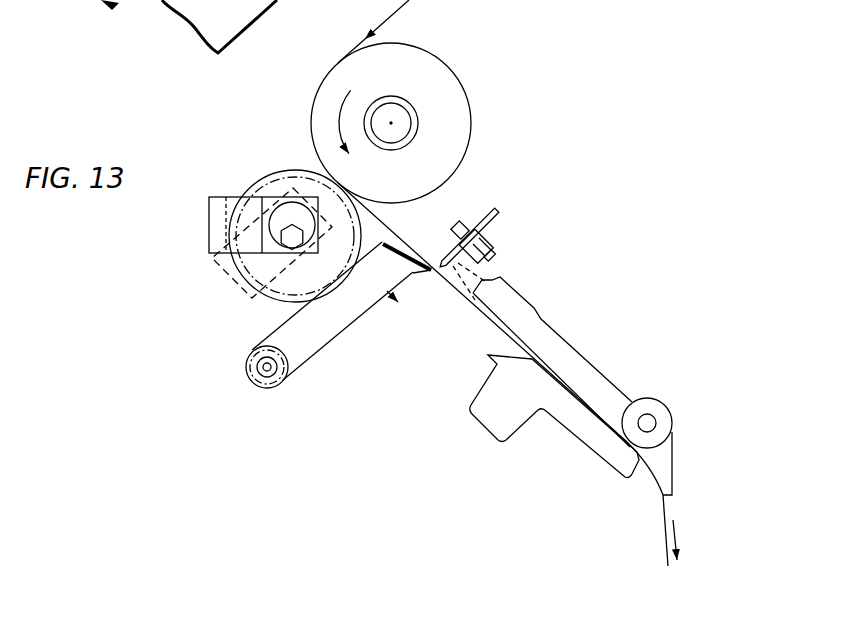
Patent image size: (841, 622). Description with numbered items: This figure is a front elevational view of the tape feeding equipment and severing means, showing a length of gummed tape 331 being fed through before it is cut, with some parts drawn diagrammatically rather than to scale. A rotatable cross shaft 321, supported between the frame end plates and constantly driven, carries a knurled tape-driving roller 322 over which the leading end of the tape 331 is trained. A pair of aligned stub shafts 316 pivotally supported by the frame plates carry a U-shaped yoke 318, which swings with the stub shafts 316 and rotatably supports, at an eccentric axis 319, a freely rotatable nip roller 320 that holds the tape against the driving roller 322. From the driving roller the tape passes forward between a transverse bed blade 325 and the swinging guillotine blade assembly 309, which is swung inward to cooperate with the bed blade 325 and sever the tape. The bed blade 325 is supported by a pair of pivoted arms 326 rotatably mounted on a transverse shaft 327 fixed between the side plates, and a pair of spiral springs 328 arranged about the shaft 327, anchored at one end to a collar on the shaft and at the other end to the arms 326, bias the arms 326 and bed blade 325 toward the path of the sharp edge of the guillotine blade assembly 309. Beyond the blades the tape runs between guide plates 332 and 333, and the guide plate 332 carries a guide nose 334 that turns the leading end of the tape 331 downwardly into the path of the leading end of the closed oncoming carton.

The guillotine blade assembly 309 is at (501, 214).
The stub shafts 316 is at (277, 203).
The U-shaped yoke 318 is at (234, 196).
The eccentric axis 319 is at (290, 238).
The nip roller 320 is at (256, 186).
The cross shaft 321 is at (418, 122).
The tape-driving roller 322 is at (462, 82).
The bed blade 325 is at (425, 275).
The pivoted arms 326 is at (347, 312).
The transverse shaft 327 is at (268, 369).
The spiral springs 328 is at (283, 358).
The gummed tape 331 is at (358, 36).
The guide plate 332 is at (555, 343).
The guide plate 333 is at (565, 435).
The guide nose 334 is at (674, 458).